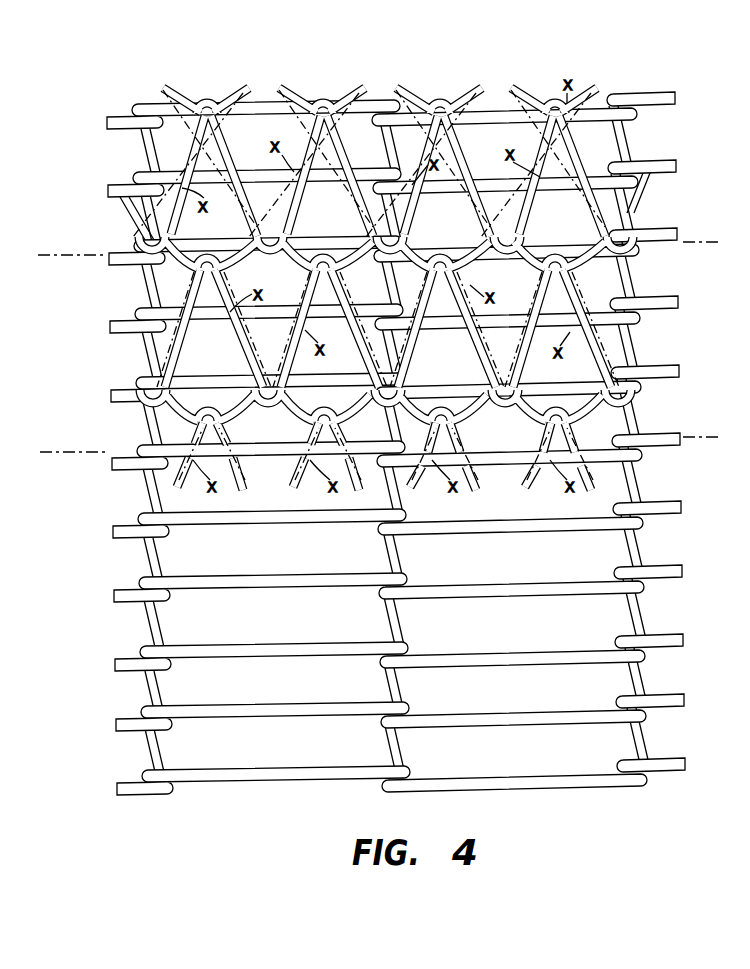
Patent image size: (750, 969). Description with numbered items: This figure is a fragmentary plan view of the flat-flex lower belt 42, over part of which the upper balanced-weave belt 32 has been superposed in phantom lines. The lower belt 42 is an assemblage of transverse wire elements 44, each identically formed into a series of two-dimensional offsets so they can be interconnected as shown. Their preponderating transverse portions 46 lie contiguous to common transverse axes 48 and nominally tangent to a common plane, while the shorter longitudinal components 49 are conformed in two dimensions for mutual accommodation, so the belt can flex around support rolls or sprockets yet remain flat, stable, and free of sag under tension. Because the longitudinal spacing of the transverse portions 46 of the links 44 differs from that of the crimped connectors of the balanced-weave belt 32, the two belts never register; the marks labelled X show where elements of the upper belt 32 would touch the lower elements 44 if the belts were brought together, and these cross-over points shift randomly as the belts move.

The balanced-weave belt 32 is at (523, 97).
The flat-flex lower belt 42 is at (382, 419).
The transverse wire element 44 is at (255, 525).
The transverse portion 46 is at (605, 168).
The common transverse axis 48 is at (699, 234).
The longitudinal component 49 is at (148, 155).